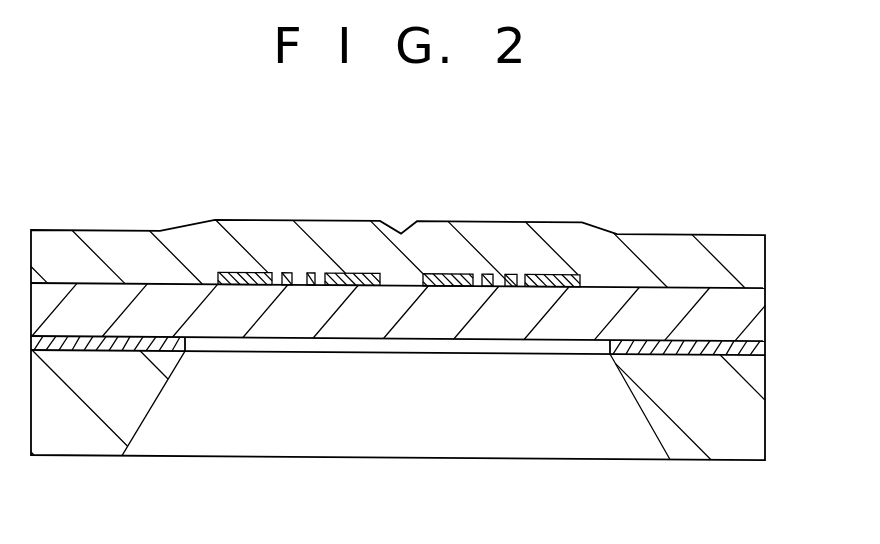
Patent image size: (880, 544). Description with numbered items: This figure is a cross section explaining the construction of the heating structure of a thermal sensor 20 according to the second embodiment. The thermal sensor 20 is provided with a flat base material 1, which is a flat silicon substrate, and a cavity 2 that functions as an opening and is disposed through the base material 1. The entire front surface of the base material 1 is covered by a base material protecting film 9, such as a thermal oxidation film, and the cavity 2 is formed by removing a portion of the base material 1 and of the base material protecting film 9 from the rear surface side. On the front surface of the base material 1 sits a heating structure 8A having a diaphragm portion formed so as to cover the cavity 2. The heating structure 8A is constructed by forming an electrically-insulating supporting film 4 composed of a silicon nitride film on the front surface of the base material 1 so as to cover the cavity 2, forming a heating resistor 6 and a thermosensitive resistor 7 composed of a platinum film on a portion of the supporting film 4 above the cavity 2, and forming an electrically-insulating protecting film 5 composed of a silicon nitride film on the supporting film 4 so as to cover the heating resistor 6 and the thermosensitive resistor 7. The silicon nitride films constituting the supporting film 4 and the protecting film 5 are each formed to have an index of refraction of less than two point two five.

The thermal sensor 20 is at (79, 157).
The heating structure 8A is at (613, 189).
The protecting film 5 is at (759, 263).
The supporting film 4 is at (759, 311).
The base material protecting film 9 is at (759, 351).
The base material 1 is at (759, 409).
The cavity 2 is at (588, 429).
The thermosensitive resistor 7 is at (505, 287).
The heating resistor 6 is at (545, 287).